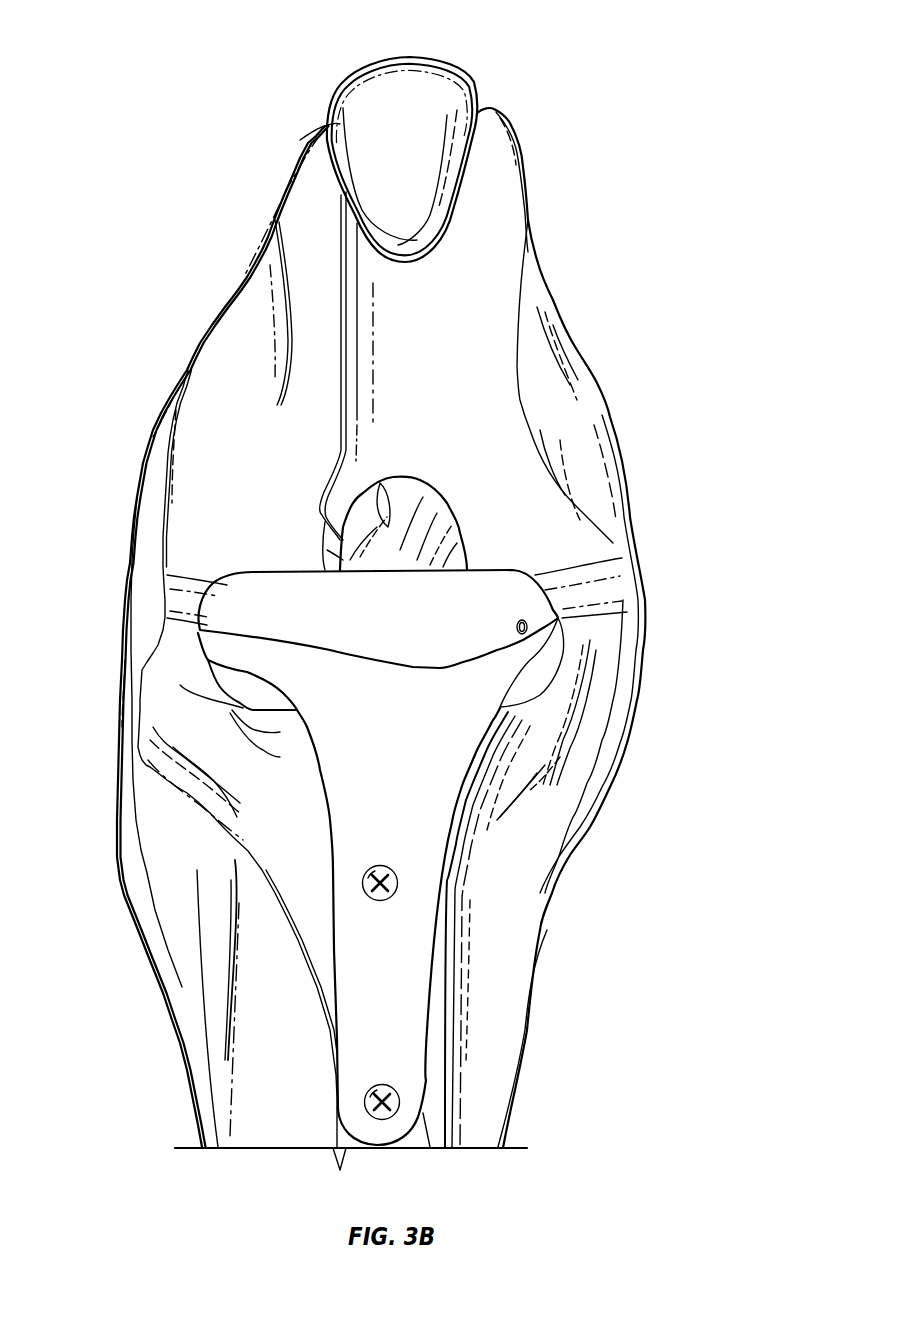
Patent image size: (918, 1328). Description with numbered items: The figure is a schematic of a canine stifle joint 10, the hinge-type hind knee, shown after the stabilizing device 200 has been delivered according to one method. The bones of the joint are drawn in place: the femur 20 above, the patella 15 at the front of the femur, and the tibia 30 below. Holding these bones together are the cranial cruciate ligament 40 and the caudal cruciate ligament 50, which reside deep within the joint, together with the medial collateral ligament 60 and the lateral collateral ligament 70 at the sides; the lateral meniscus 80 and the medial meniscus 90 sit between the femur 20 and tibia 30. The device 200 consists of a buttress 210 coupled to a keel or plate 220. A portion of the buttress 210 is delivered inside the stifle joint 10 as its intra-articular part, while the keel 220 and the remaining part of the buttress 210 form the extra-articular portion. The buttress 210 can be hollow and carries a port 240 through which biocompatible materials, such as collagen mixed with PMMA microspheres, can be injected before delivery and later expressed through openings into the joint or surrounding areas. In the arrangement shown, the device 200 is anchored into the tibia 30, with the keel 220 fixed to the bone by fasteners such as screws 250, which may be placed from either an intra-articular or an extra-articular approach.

The stifle joint 10 is at (168, 166).
The patella 15 is at (412, 72).
The femur 20 is at (473, 333).
The tibia 30 is at (488, 1092).
The cranial cruciate ligament 40 is at (407, 570).
The caudal cruciate ligament 50 is at (447, 532).
The medial collateral ligament 60 is at (622, 707).
The lateral collateral ligament 70 is at (155, 457).
The lateral meniscus 80 is at (173, 593).
The medial meniscus 90 is at (605, 588).
The device 200 is at (455, 857).
The buttress 210 is at (493, 639).
The keel 220 is at (413, 997).
The port 240 is at (515, 625).
The screws 250 is at (362, 883).